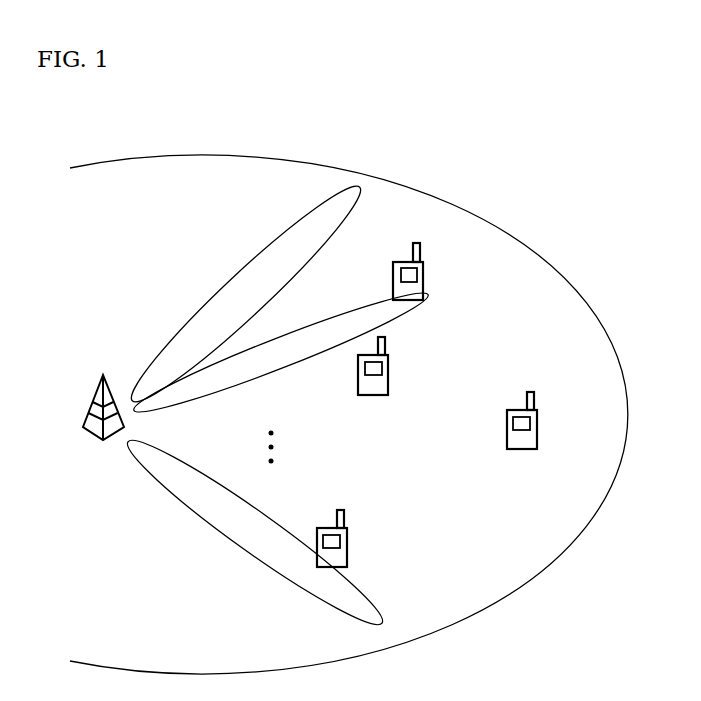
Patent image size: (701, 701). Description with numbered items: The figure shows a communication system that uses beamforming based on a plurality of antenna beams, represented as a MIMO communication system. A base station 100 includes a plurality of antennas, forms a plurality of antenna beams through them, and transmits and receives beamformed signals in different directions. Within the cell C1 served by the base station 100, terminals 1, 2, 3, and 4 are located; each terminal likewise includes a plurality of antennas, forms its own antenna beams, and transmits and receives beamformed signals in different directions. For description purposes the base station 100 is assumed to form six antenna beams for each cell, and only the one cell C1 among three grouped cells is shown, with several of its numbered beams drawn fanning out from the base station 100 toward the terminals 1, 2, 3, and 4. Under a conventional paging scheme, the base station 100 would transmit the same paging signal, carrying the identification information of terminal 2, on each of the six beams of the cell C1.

The base station 100 is at (97, 388).
The terminal 1 is at (424, 272).
The terminal 2 is at (389, 367).
The terminal 3 is at (538, 422).
The terminal 4 is at (348, 538).
The cell C1 is at (214, 155).